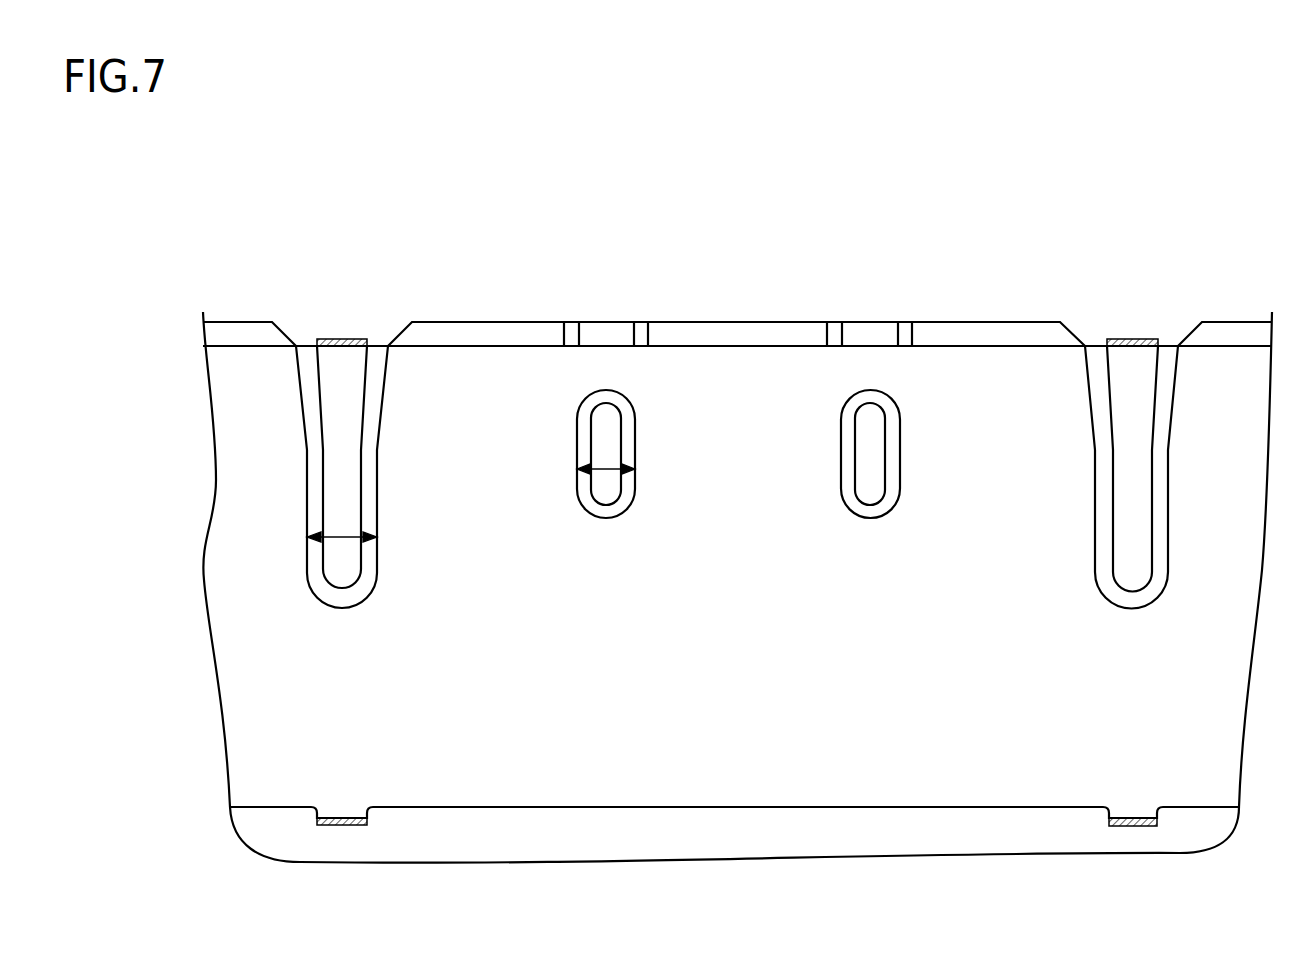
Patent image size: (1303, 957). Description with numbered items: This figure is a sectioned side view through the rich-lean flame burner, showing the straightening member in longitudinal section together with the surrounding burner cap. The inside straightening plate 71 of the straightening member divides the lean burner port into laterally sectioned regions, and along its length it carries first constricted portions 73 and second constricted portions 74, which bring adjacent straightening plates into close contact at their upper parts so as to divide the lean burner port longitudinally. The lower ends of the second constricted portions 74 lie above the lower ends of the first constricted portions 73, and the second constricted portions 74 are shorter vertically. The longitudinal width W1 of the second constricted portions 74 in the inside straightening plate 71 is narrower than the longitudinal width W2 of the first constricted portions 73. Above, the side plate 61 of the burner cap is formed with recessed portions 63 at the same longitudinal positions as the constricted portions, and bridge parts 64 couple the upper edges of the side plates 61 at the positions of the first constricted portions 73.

The side plate of burner cap 61 is at (535, 325).
The recessed portion 63 is at (607, 332).
The bridge part 64 is at (339, 338).
The inside straightening plate 71 is at (963, 360).
The first constricted portion 73 is at (345, 459).
The second constricted portion 74 is at (612, 440).
The longitudinal width of second constricted portion W1 is at (602, 470).
The longitudinal width of first constricted portion W2 is at (345, 538).